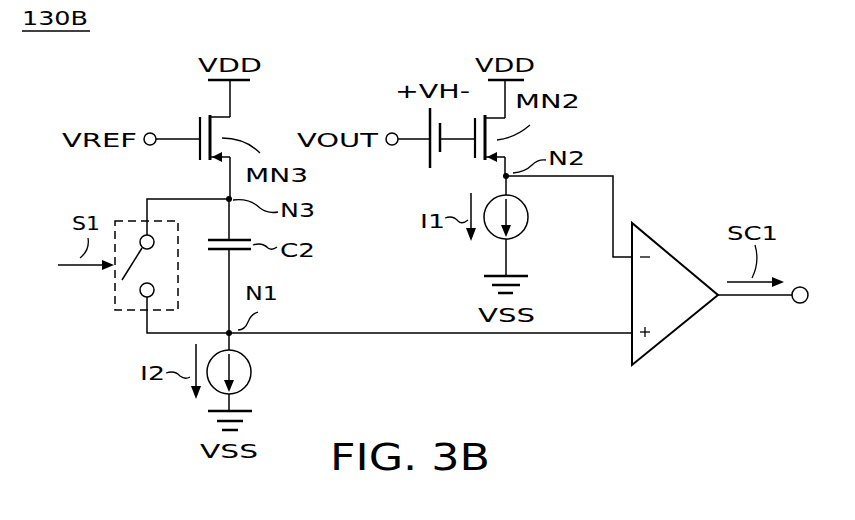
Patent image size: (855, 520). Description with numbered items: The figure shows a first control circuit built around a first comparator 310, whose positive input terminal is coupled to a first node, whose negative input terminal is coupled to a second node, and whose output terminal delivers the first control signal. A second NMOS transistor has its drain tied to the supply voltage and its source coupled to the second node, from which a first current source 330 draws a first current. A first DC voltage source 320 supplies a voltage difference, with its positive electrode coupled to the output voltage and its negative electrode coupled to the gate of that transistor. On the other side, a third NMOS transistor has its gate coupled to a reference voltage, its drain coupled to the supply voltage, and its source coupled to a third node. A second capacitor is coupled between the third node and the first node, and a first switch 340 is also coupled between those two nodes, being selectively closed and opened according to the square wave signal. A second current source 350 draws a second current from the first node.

The first comparator 310 is at (633, 225).
The first DC voltage source 320 is at (428, 150).
The first current source 330 is at (530, 218).
The first switch 340 is at (113, 305).
The second current source 350 is at (252, 373).